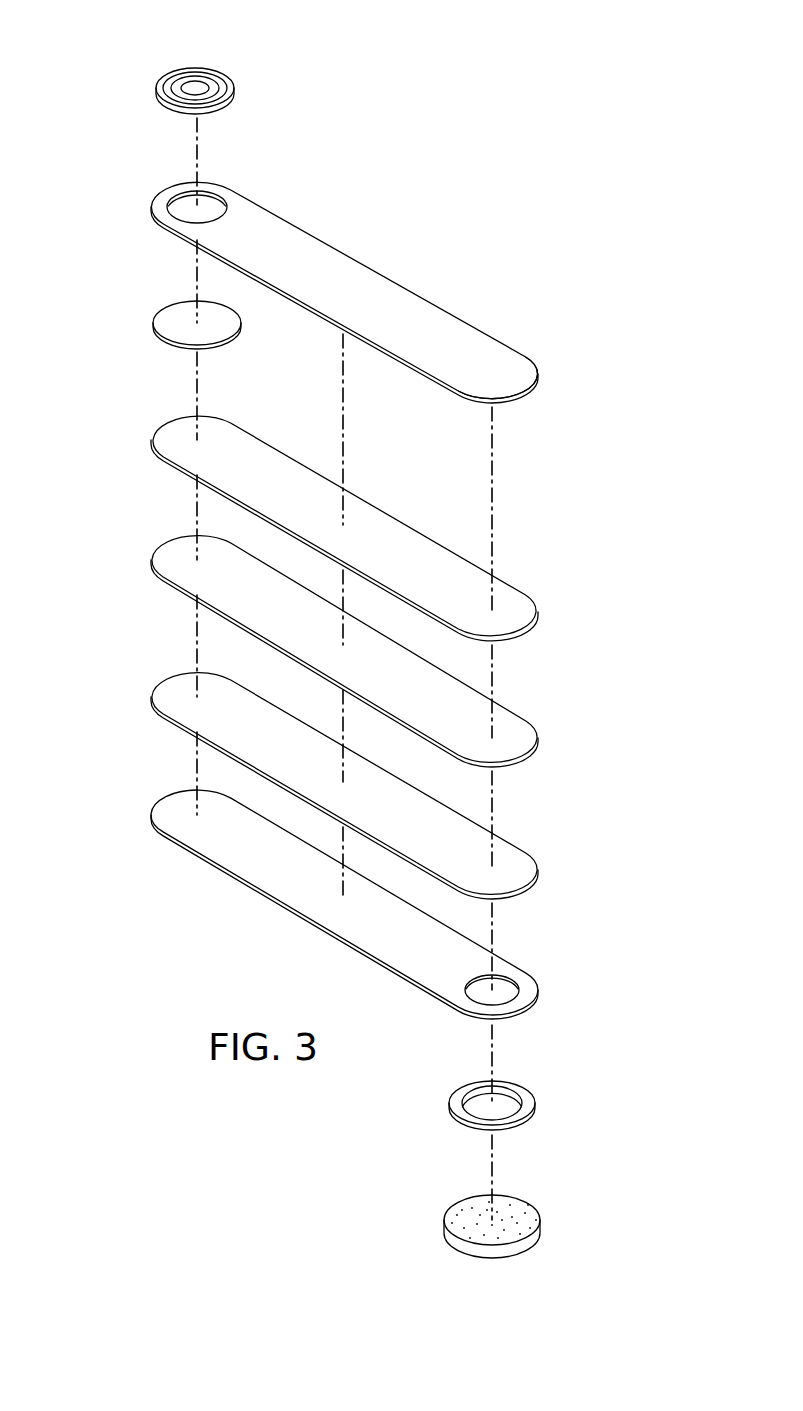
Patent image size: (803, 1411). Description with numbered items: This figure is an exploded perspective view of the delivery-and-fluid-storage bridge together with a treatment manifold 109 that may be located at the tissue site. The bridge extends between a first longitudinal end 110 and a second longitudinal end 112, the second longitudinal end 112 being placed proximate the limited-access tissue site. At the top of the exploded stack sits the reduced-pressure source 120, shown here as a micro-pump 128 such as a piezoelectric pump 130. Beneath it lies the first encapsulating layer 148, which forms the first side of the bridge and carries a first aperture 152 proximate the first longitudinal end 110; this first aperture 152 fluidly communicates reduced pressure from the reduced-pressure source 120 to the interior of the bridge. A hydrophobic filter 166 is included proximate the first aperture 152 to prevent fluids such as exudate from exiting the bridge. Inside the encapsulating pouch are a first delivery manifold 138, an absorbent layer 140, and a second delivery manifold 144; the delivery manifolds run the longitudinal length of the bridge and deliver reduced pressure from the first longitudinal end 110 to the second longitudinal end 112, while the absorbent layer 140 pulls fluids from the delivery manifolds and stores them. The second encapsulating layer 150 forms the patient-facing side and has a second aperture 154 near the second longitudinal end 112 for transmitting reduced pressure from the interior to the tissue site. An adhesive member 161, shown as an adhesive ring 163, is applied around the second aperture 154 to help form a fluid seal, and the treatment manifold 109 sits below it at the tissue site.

The treatment manifold 109 is at (550, 1230).
The first longitudinal end 110 is at (349, 272).
The second longitudinal end 112 is at (522, 363).
The reduced-pressure source 120 is at (153, 61).
The micro-pump 128 is at (160, 86).
The piezoelectric pump 130 is at (150, 96).
The first delivery manifold 138 is at (521, 578).
The absorbent layer 140 is at (520, 701).
The second delivery manifold 144 is at (547, 878).
The first encapsulating layer 148 is at (337, 257).
The second encapsulating layer 150 is at (365, 904).
The first aperture 152 is at (180, 195).
The second aperture 154 is at (527, 967).
The adhesive member 161 is at (458, 1093).
The adhesive ring 163 is at (519, 1089).
The hydrophobic filter 166 is at (153, 323).